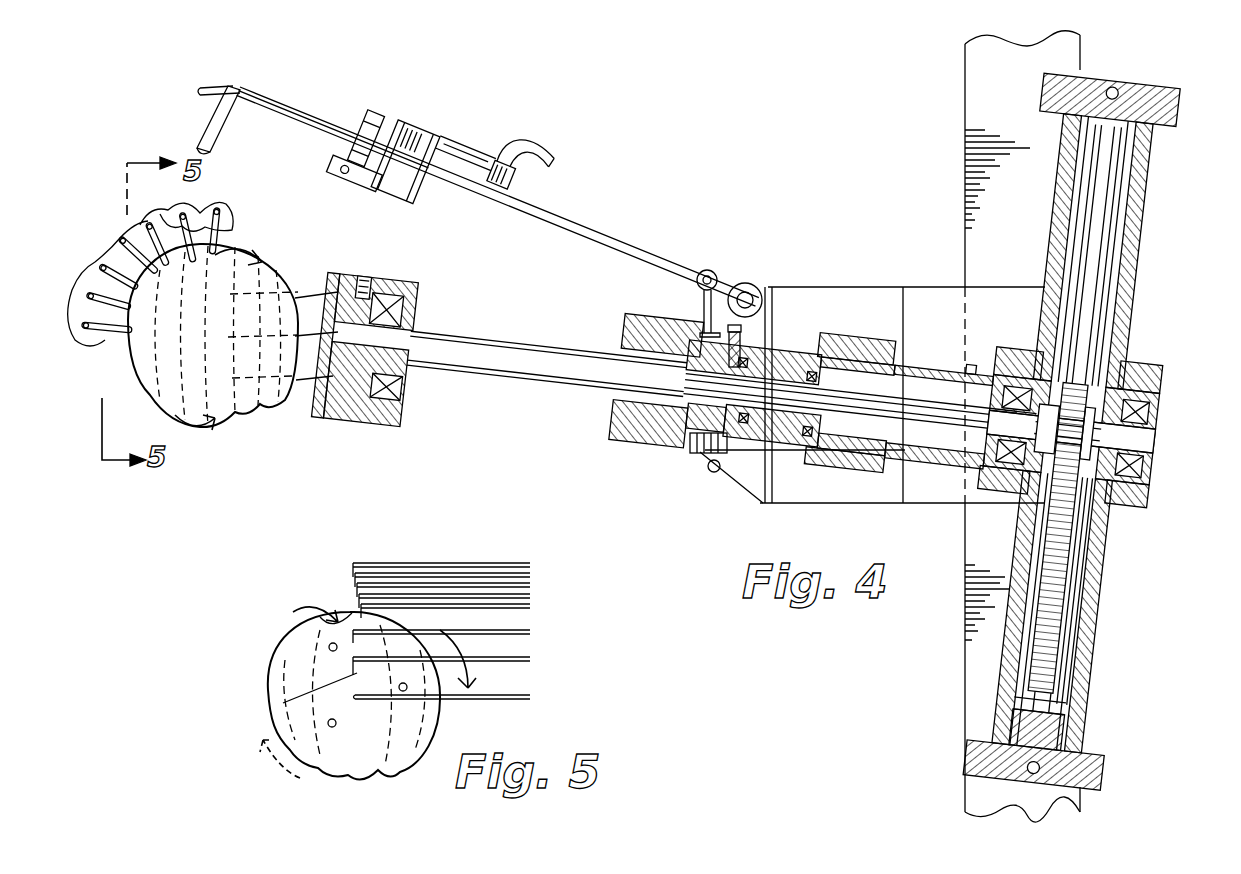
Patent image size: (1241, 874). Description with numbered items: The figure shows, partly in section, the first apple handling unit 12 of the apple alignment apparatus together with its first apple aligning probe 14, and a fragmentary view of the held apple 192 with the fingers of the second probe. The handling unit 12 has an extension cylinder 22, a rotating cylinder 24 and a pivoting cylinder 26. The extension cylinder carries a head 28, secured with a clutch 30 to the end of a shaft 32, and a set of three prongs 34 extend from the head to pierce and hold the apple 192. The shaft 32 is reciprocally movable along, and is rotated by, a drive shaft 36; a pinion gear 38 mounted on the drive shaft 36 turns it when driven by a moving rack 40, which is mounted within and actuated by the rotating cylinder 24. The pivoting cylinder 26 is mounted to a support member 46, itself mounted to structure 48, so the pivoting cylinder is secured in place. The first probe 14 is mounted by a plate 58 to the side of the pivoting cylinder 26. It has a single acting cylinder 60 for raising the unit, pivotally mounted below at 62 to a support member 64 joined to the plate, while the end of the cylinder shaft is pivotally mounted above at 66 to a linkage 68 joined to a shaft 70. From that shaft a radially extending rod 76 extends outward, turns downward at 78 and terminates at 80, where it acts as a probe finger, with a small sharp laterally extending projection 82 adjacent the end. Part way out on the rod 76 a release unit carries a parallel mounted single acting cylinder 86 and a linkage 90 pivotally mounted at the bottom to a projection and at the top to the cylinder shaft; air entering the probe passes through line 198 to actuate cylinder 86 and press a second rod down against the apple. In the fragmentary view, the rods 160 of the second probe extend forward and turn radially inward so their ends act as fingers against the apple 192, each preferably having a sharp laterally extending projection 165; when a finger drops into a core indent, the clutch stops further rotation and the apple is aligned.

In FIG. 4, the first apple handling unit 12 is at (1148, 262).
In FIG. 4, the first apple aligning probe 14 is at (465, 172).
In FIG. 4, the extension cylinder 22 is at (983, 352).
In FIG. 4, the rotating cylinder 24 is at (1102, 572).
In FIG. 4, the pivoting cylinder 26 is at (846, 287).
In FIG. 4, the head 28 is at (415, 292).
In FIG. 4, the clutch 30 is at (378, 272).
In FIG. 4, the shaft 32 is at (536, 347).
In FIG. 4, the prongs 34 is at (322, 292).
In FIG. 4, the drive shaft 36 is at (985, 445).
In FIG. 4, the pinion gear 38 is at (1150, 386).
In FIG. 4, the rack 40 is at (1088, 546).
In FIG. 4, the support member 46 is at (937, 287).
In FIG. 4, the structure 48 is at (965, 142).
In FIG. 4, the plate 58 is at (778, 340).
In FIG. 4, the single acting cylinder 60 is at (697, 455).
In FIG. 4, the pivotal mounting 62 is at (719, 473).
In FIG. 4, the support member 64 is at (745, 492).
In FIG. 4, the pivotal mounting 66 is at (712, 272).
In FIG. 4, the linkage 68 is at (755, 285).
In FIG. 4, the shaft 70 is at (741, 330).
In FIG. 4, the radially extending rod 76 is at (648, 252).
In FIG. 4, the downward turn 78 is at (228, 84).
In FIG. 4, the finger end 80 is at (212, 156).
In FIG. 4, the laterally extending projection 82 is at (208, 140).
In FIG. 4, the single acting cylinder 86 is at (462, 150).
In FIG. 4, the linkage 90 is at (362, 112).
In FIG. 4, the rod 160 is at (90, 262).
In FIG. 5, the rod 160 is at (522, 697).
In FIG. 5, the laterally extending projection 165 is at (290, 700).
In FIG. 4, the apple 192 is at (168, 392).
In FIG. 5, the apple 192 is at (280, 636).
In FIG. 4, the line 198 is at (545, 143).